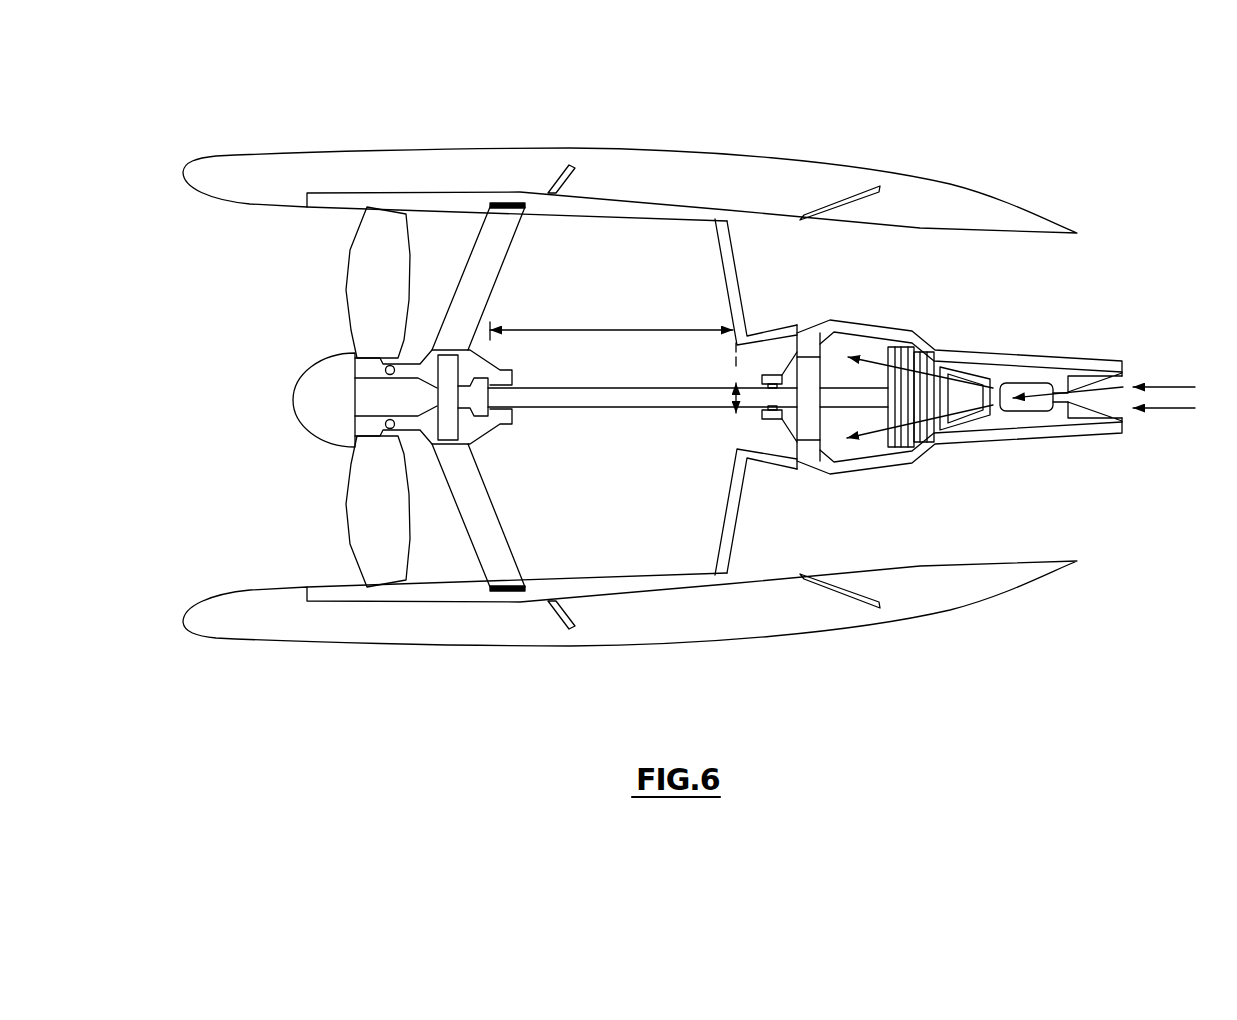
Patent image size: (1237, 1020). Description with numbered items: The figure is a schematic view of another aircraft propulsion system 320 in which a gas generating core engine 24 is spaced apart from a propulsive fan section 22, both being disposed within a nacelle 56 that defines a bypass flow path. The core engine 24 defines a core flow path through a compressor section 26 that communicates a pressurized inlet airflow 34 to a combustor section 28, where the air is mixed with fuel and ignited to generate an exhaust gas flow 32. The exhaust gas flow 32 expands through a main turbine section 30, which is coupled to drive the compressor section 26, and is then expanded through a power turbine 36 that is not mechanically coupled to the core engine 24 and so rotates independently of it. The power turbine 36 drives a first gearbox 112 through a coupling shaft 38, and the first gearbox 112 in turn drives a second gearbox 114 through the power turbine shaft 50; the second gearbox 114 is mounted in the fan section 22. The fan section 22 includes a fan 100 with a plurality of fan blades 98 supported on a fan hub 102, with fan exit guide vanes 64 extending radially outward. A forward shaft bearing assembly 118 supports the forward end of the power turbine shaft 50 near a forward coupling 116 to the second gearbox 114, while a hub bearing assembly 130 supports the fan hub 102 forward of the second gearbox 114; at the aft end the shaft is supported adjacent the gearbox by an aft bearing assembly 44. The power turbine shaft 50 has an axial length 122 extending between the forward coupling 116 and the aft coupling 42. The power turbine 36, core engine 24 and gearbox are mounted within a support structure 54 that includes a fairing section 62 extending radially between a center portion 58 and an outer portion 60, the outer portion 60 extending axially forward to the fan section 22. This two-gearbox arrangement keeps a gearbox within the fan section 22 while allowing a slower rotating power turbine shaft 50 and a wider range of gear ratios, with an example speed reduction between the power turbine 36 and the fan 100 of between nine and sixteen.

The propulsion system 320 is at (1068, 132).
The fan section 22 is at (307, 140).
The core engine 24 is at (1073, 348).
The compressor section 26 is at (1093, 411).
The combustor section 28 is at (1028, 412).
The main turbine section 30 is at (955, 430).
The exhaust gas flow 32 is at (875, 362).
The inlet airflow 34 is at (1175, 387).
The power turbine 36 is at (898, 460).
The coupling shaft 38 is at (868, 403).
The aft coupling 42 is at (745, 398).
The aft bearing assembly 44 is at (757, 424).
The power turbine shaft 50 is at (565, 388).
The support structure 54 is at (605, 618).
The nacelle 56 is at (364, 628).
The center portion 58 is at (822, 478).
The outer portion 60 is at (682, 595).
The fairing section 62 is at (712, 268).
The fan exit guide vanes 64 is at (510, 250).
The fan blades 98 is at (348, 272).
The fan 100 is at (311, 318).
The fan hub 102 is at (360, 403).
The first gearbox 112 is at (822, 368).
The second gearbox 114 is at (447, 476).
The forward coupling 116 is at (468, 442).
The forward shaft bearing assembly 118 is at (521, 417).
The axial length 122 is at (588, 330).
The hub bearing assembly 130 is at (393, 432).